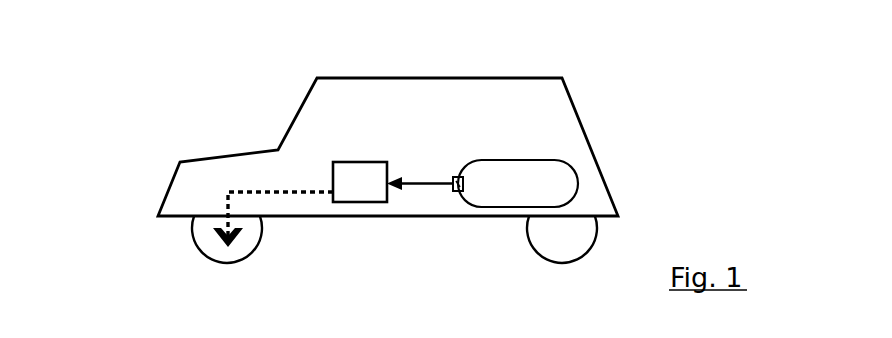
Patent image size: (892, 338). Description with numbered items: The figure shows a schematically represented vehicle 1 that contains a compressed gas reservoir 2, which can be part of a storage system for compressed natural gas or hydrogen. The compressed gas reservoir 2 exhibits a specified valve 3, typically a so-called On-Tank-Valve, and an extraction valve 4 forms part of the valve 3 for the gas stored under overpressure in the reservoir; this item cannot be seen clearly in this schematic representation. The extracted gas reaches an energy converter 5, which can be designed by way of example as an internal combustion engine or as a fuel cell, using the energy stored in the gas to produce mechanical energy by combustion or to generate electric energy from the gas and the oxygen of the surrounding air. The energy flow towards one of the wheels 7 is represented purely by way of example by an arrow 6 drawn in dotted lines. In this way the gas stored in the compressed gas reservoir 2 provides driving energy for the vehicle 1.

The vehicle 1 is at (306, 119).
The compressed gas reservoir 2 is at (560, 178).
The valve 3 is at (452, 188).
The extraction valve 4 is at (420, 229).
The energy converter 5 is at (360, 182).
The arrow 6 is at (262, 190).
The wheel 7 is at (203, 232).